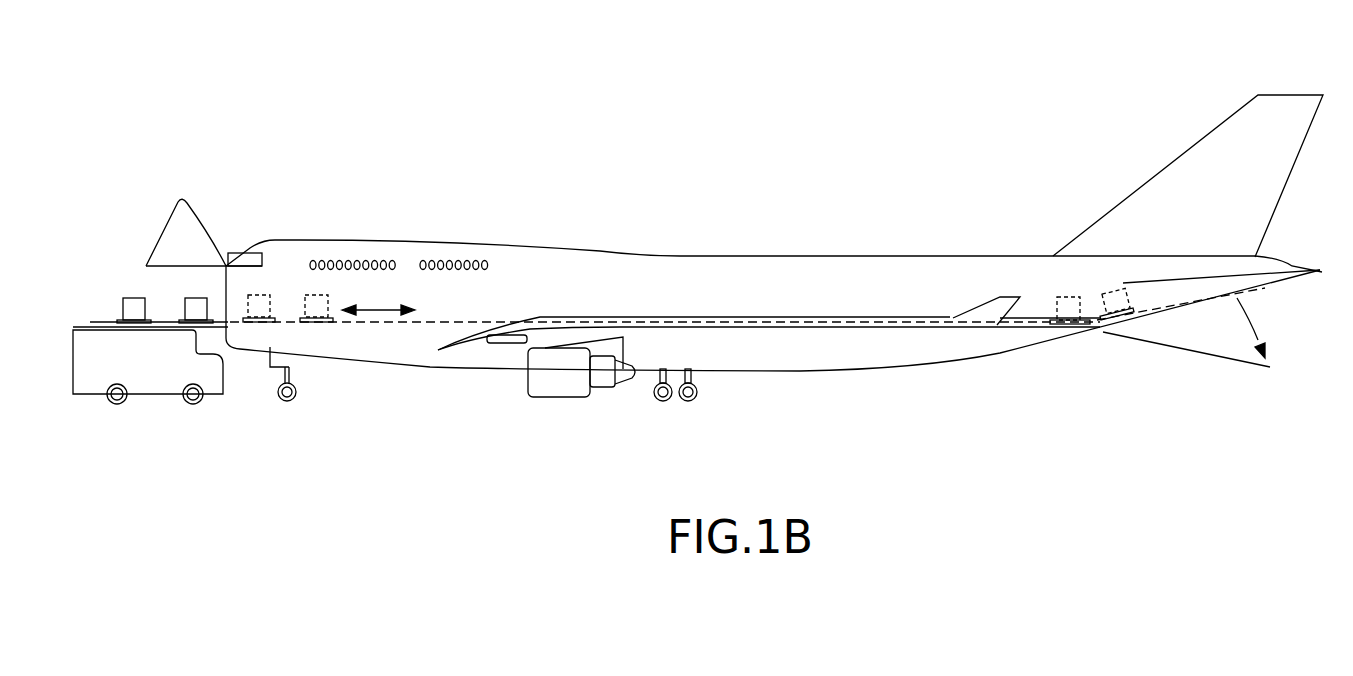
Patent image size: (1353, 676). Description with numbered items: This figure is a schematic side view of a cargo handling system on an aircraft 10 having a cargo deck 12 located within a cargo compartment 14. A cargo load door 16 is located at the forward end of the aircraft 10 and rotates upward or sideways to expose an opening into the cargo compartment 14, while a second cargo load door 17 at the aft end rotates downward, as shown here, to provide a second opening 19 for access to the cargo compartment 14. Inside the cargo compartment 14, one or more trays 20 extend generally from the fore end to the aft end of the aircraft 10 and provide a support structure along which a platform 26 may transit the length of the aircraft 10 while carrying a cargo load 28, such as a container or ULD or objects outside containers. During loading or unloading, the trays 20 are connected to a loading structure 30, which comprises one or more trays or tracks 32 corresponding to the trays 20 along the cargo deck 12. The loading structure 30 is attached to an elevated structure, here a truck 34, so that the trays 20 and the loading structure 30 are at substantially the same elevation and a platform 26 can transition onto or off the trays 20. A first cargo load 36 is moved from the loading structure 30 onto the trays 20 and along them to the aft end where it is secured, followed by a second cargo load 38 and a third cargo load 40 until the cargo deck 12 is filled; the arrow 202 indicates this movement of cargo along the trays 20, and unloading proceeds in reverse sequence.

The aircraft 10 is at (288, 128).
The cargo deck 12 is at (312, 323).
The cargo compartment 14 is at (592, 260).
The cargo load door 16 is at (178, 212).
The second cargo load door 17 is at (1194, 350).
The second opening 19 is at (1275, 314).
The trays 20 is at (380, 347).
The cargo movement direction 202 is at (466, 309).
The platform 26 is at (116, 320).
The cargo load 28 is at (135, 298).
The loading structure 30 is at (95, 322).
The trays or tracks 32 is at (108, 322).
The truck 34 is at (145, 393).
The first cargo load 36 is at (1068, 297).
The second cargo load 38 is at (320, 300).
The third cargo load 40 is at (265, 310).